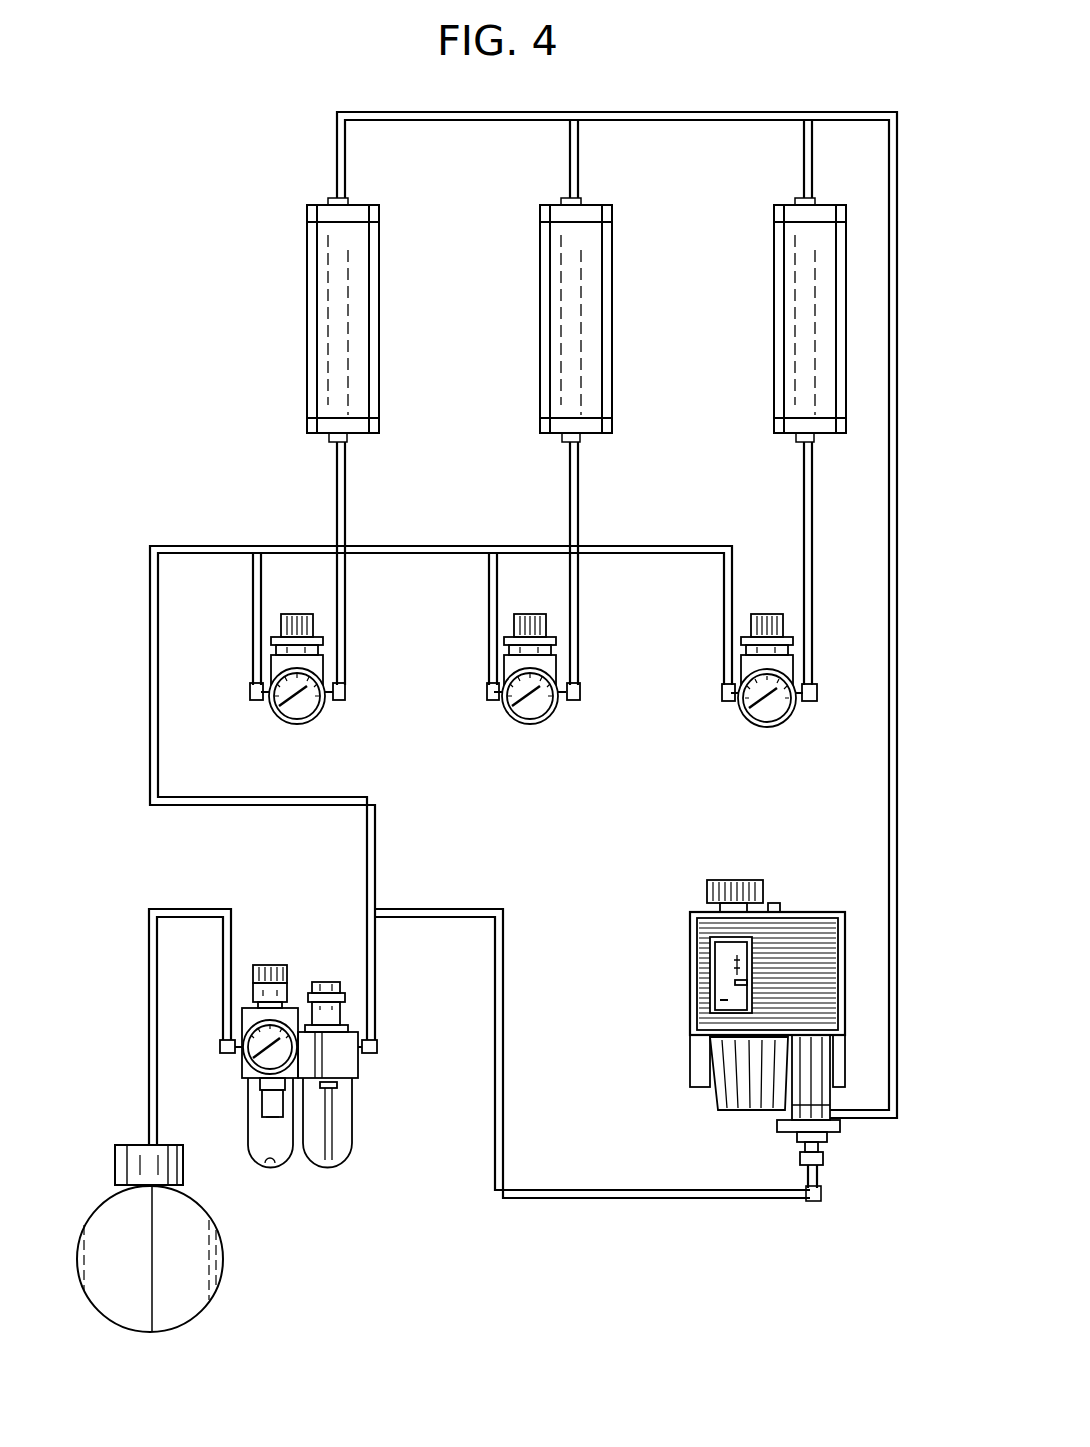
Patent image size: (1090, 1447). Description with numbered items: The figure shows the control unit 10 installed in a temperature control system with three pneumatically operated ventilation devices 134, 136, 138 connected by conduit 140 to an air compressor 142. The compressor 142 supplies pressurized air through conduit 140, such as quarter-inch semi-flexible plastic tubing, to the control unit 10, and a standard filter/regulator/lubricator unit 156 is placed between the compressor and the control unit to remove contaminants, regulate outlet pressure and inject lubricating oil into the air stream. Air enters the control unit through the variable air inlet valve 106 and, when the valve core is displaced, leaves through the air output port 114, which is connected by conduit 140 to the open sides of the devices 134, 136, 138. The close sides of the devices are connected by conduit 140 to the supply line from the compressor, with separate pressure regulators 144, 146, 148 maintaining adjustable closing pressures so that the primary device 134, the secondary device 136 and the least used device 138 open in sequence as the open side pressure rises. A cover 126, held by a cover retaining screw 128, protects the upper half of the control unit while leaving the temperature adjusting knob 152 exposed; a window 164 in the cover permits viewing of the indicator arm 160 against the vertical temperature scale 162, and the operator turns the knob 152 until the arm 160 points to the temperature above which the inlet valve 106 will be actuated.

The control unit 10 is at (760, 1007).
The variable air inlet valve 106 is at (823, 1158).
The air output port 114 is at (833, 1105).
The cover 126 is at (695, 912).
The cover retaining screw 128 is at (775, 903).
The primary pneumatic ventilating device 134 is at (773, 263).
The secondary pneumatic device 136 is at (540, 263).
The pneumatic device 138 is at (306, 262).
The conduit 140 is at (692, 112).
The air compressor 142 is at (223, 1280).
The pressure regulator 144 is at (780, 723).
The pressure regulator 146 is at (547, 720).
The pressure regulator 148 is at (305, 720).
The temperature adjusting knob 152 is at (725, 880).
The filter/regulator/lubricator unit 156 is at (330, 1160).
The indicator arm 160 is at (742, 982).
The vertical temperature scale 162 is at (733, 960).
The window 164 is at (735, 1002).